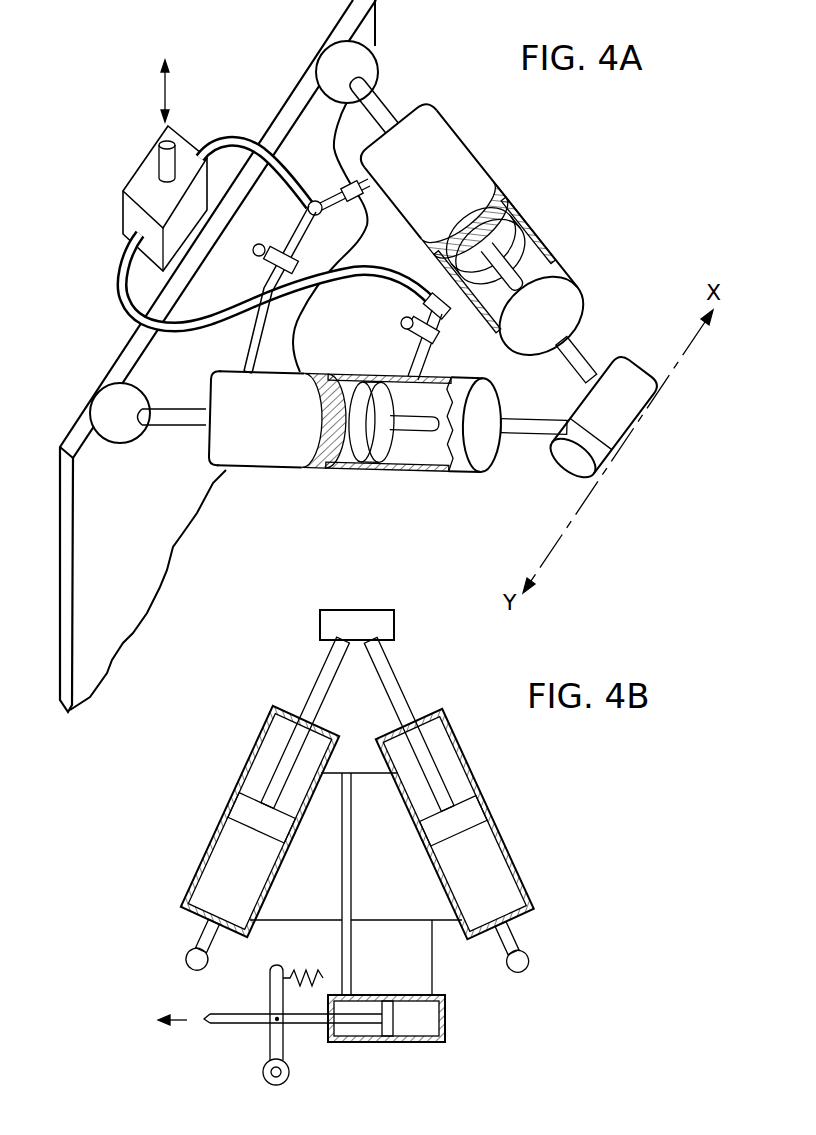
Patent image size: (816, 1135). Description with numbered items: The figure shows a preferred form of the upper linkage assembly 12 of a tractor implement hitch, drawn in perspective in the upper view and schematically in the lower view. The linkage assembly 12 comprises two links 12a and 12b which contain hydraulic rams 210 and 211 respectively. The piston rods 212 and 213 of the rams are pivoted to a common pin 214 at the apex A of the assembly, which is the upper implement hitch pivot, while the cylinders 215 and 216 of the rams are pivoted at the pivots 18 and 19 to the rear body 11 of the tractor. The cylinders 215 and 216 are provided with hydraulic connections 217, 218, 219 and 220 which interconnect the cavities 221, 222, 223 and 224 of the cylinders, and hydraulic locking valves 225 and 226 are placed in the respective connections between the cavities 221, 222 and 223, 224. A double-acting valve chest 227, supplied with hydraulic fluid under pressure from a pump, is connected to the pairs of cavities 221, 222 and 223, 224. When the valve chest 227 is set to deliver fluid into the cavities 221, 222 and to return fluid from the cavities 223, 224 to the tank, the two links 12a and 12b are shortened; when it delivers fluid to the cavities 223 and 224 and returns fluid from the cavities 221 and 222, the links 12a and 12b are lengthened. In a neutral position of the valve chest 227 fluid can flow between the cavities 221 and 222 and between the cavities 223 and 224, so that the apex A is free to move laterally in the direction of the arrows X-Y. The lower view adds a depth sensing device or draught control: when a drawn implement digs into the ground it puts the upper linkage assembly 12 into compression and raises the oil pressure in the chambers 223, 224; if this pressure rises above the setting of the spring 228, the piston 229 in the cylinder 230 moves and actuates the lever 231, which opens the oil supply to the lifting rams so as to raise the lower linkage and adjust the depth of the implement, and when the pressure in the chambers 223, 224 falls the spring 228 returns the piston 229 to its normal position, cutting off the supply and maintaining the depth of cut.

In FIG. 4A, the rear body 11 is at (83, 508).
In FIG. 4A, the linkage assembly 12 is at (445, 292).
In FIG. 4B, the linkage assembly 12 is at (357, 789).
In FIG. 4A, the link 12a is at (479, 211).
In FIG. 4B, the link 12a is at (246, 805).
In FIG. 4A, the link 12b is at (372, 452).
In FIG. 4B, the link 12b is at (468, 806).
In FIG. 4A, the pivot 18 is at (327, 57).
In FIG. 4B, the pivot 18 is at (187, 950).
In FIG. 4A, the pivot 19 is at (107, 400).
In FIG. 4B, the pivot 19 is at (528, 947).
In FIG. 4A, the hydraulic ram 210 is at (479, 211).
In FIG. 4B, the hydraulic ram 210 is at (280, 705).
In FIG. 4A, the hydraulic ram 211 is at (372, 444).
In FIG. 4B, the hydraulic ram 211 is at (443, 710).
In FIG. 4A, the piston rod 212 is at (575, 356).
In FIG. 4A, the piston rod 213 is at (537, 426).
In FIG. 4A, the common pin 214 is at (603, 455).
In FIG. 4A, the cylinder 215 is at (437, 142).
In FIG. 4A, the cylinder 216 is at (247, 450).
In FIG. 4A, the hydraulic connection 217 is at (427, 276).
In FIG. 4A, the hydraulic connection 218 is at (427, 343).
In FIG. 4A, the hydraulic connection 219 is at (340, 184).
In FIG. 4A, the hydraulic connection 220 is at (270, 287).
In FIG. 4A, the cavity 221 is at (535, 240).
In FIG. 4A, the cavity 222 is at (417, 455).
In FIG. 4A, the cavity 223 is at (478, 200).
In FIG. 4B, the cavity 223 is at (230, 846).
In FIG. 4A, the cavity 224 is at (348, 452).
In FIG. 4B, the cavity 224 is at (490, 852).
In FIG. 4A, the hydraulic locking valve 225 is at (400, 330).
In FIG. 4A, the hydraulic locking valve 226 is at (270, 248).
In FIG. 4A, the double-acting valve chest 227 is at (147, 168).
In FIG. 4B, the spring 228 is at (308, 975).
In FIG. 4B, the piston 229 is at (388, 1032).
In FIG. 4B, the cylinder 230 is at (446, 1018).
In FIG. 4B, the lever 231 is at (275, 1035).
In FIG. 4A, the apex A is at (635, 395).
In FIG. 4B, the apex A is at (357, 611).